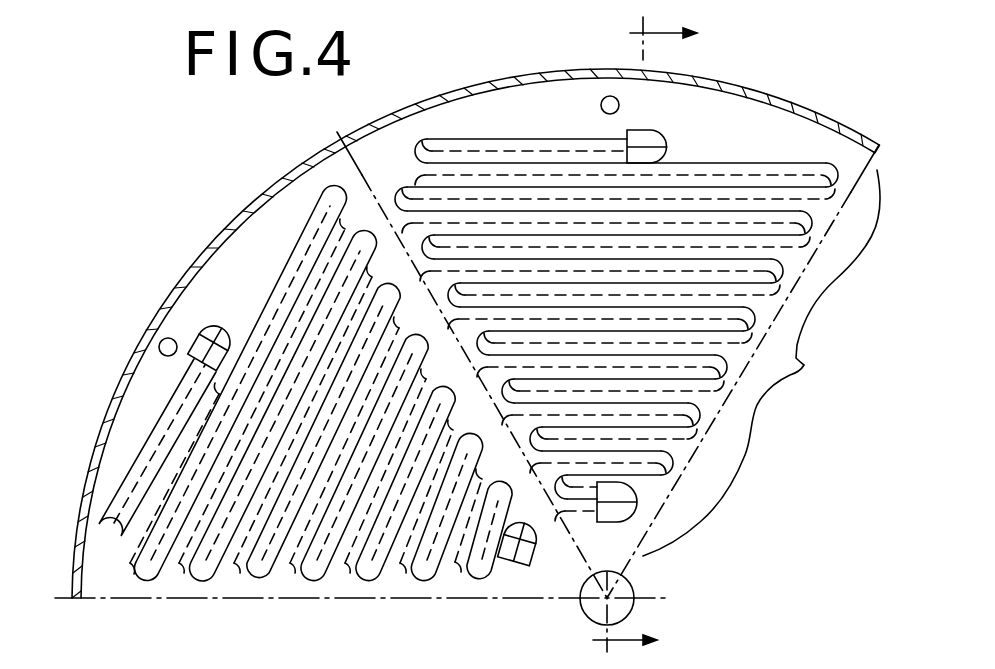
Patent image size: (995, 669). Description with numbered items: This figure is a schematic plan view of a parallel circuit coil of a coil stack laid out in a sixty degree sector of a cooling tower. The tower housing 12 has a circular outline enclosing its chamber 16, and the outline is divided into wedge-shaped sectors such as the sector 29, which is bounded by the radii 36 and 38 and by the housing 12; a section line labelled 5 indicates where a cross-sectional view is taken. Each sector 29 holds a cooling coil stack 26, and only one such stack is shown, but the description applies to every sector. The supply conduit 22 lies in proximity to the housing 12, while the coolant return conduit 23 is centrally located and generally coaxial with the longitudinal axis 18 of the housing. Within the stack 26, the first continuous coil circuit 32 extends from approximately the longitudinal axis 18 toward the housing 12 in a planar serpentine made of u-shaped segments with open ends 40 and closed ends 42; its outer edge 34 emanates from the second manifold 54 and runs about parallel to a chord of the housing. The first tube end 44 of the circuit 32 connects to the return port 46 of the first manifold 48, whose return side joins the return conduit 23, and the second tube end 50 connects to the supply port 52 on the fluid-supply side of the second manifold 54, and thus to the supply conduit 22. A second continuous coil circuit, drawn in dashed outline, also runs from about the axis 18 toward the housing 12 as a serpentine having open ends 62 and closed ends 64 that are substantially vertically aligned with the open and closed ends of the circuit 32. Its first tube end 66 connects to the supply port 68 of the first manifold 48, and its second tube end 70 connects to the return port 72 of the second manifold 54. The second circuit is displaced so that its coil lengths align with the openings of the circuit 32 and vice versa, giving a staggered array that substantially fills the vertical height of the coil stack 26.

The section line 5- 5 is at (654, 336).
The tower housing 12 is at (763, 90).
The chamber 16 is at (548, 383).
The longitudinal axis 18 is at (612, 600).
The supply conduit 22 is at (600, 105).
The coolant return conduit 23 is at (635, 592).
The cooling coil stack 26 is at (761, 363).
The sector 29 is at (272, 232).
The first continuous coil circuit 32 is at (290, 422).
The outer edge 34 is at (114, 498).
The radius 36 is at (352, 164).
The radius 38 is at (100, 597).
The open ends 40 is at (233, 578).
The closed ends 42 is at (343, 195).
The first tube end 44 is at (534, 580).
The return port 46 is at (527, 519).
The first manifold 48 is at (535, 565).
The second tube end 50 is at (197, 356).
The supply port 52 is at (193, 315).
The second manifold 54 is at (224, 316).
The open ends 62 is at (293, 575).
The closed ends 64 is at (408, 289).
The first tube end 66 is at (535, 540).
The supply port 68 is at (515, 563).
The second tube end 70 is at (201, 362).
The return port 72 is at (234, 326).